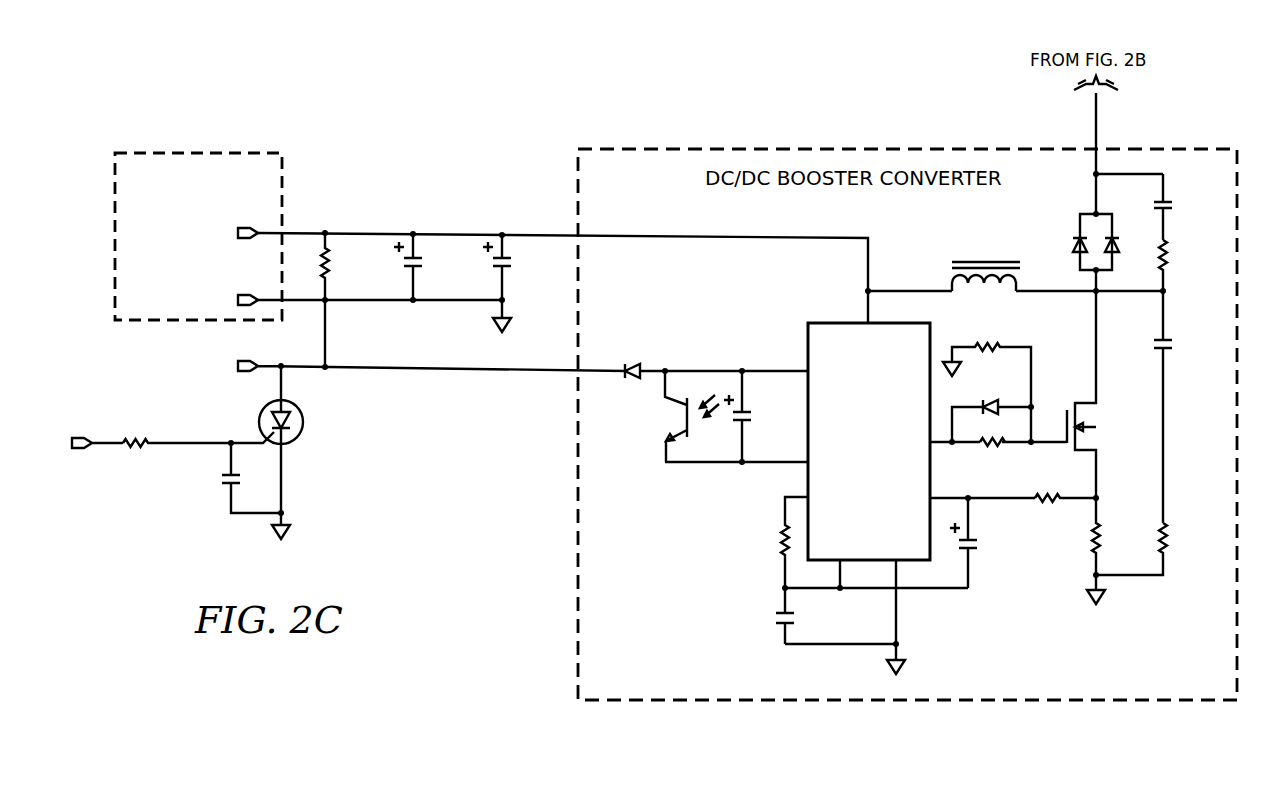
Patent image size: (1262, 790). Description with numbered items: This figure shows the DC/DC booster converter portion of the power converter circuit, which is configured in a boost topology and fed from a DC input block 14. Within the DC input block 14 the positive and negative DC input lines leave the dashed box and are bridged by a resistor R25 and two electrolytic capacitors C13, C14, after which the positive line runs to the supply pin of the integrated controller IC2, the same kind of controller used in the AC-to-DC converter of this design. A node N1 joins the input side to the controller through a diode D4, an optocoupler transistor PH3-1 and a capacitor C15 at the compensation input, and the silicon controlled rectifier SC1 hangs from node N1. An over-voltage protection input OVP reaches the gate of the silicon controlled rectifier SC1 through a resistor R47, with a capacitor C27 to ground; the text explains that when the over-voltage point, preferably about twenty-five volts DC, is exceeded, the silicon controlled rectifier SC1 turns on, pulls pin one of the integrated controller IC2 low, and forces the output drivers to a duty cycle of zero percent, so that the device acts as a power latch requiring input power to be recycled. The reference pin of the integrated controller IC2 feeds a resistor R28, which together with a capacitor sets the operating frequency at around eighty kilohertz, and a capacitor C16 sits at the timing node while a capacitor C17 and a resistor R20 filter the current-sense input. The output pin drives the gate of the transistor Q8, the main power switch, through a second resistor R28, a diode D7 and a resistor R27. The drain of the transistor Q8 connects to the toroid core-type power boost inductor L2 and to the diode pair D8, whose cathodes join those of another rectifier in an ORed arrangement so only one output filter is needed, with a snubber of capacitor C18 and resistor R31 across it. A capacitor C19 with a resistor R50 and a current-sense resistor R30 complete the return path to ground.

The DC input block 14 is at (199, 153).
The resistor R25 is at (341, 299).
The capacitor C13 is at (423, 266).
The capacitor C14 is at (512, 266).
The node N1 is at (417, 367).
The silicon controlled rectifier SC1 is at (286, 439).
The over-voltage protection point OVP is at (76, 444).
The resistor R47 is at (170, 429).
The capacitor C27 is at (229, 478).
The diode D4 is at (712, 356).
The optocoupler transistor PH3-1 is at (661, 416).
The capacitor C15 is at (752, 416).
The integrated controller IC2 is at (869, 441).
The resistor R28 is at (874, 513).
The capacitor C16 is at (764, 616).
The resistor R20 is at (1059, 516).
The capacitor C17 is at (978, 543).
The diode D7 is at (991, 409).
The resistor R27 is at (987, 361).
The transistor Q8 is at (1064, 394).
The capacitor C18 is at (1177, 207).
The resistor R31 is at (1179, 265).
The diode D8 is at (1080, 252).
The inductor L2 is at (986, 263).
The capacitor C19 is at (1177, 407).
The resistor R50 is at (1148, 549).
The resistor R30 is at (1110, 551).